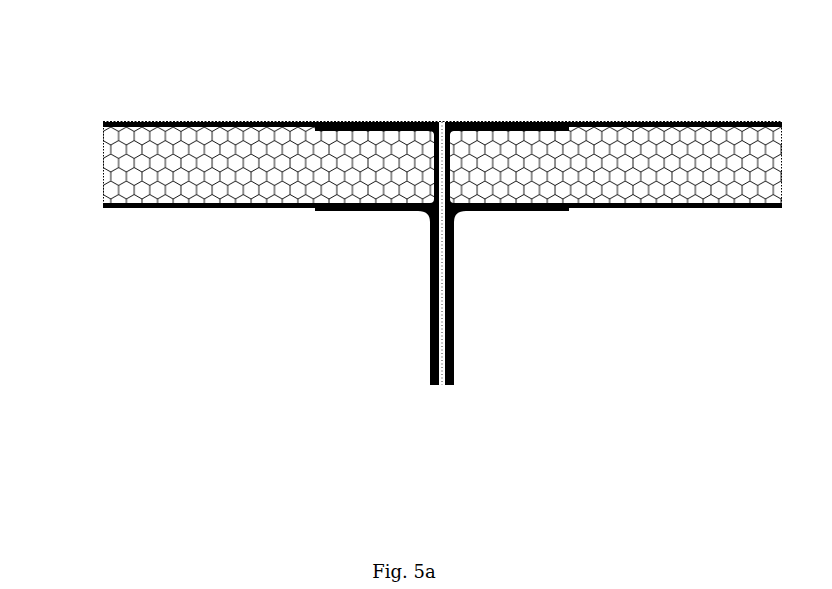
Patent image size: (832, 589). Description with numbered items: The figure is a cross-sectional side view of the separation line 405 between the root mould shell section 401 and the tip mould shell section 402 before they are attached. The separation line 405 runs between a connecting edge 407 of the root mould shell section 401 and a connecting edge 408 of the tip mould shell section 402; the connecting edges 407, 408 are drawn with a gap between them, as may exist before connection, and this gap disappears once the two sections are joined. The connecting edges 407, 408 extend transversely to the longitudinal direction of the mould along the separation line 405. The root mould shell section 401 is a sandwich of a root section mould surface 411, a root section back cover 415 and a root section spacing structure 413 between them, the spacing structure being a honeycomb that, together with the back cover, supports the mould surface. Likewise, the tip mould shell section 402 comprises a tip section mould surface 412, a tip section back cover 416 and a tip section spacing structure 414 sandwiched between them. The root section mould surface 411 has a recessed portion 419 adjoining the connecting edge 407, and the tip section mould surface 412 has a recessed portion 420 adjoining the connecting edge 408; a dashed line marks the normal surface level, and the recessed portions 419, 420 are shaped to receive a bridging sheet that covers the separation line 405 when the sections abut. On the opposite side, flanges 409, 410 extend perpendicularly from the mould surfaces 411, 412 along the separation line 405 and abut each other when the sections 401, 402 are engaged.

The root mould shell section 401 is at (290, 253).
The tip mould shell section 402 is at (565, 252).
The separation line 405 is at (442, 407).
The connecting edge 407 is at (435, 122).
The connecting edge 408 is at (449, 122).
The flange 409 is at (430, 327).
The flange 410 is at (454, 307).
The root section mould surface 411 is at (191, 122).
The tip section mould surface 412 is at (620, 122).
The root section spacing structure 413 is at (103, 170).
The tip section spacing structure 414 is at (783, 147).
The root section back cover 415 is at (180, 208).
The tip section back cover 416 is at (650, 210).
The recessed portion 419 is at (382, 110).
The recessed portion 420 is at (493, 110).